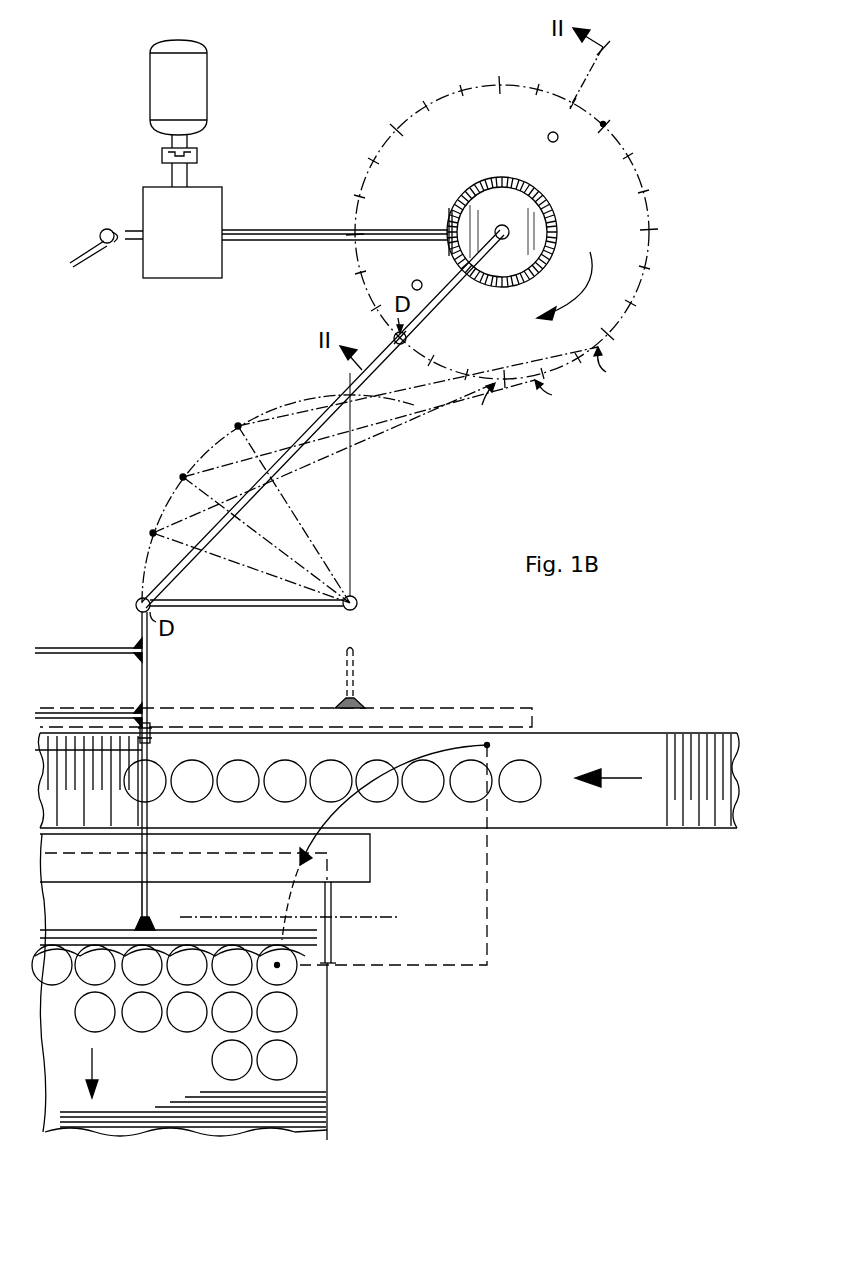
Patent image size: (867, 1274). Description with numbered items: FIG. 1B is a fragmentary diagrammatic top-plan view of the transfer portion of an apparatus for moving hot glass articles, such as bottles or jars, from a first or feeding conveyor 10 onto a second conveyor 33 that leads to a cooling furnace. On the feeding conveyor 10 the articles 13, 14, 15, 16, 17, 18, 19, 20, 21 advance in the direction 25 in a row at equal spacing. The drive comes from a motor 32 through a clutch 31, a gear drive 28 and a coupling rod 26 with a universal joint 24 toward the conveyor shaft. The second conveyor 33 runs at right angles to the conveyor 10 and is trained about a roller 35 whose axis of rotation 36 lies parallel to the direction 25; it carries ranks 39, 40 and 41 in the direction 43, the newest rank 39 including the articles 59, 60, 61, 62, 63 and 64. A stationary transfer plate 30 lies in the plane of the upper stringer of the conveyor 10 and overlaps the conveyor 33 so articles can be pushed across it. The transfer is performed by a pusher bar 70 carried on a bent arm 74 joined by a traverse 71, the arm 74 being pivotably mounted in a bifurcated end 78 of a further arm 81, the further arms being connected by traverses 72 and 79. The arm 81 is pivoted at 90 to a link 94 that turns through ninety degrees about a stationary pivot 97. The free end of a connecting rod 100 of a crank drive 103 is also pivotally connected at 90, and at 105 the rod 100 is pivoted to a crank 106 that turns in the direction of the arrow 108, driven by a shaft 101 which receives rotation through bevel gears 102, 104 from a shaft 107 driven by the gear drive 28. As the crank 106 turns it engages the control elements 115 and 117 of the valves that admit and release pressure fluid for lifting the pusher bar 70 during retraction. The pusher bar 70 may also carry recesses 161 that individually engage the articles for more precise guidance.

The first or feeding conveyor 10 is at (606, 733).
The article 13 is at (157, 798).
The article 14 is at (200, 762).
The article 15 is at (245, 800).
The article 16 is at (290, 762).
The article 17 is at (335, 800).
The article 18 is at (378, 762).
The article 19 is at (428, 800).
The article 20 is at (486, 800).
The article 21 is at (540, 766).
The universal joint 24 is at (105, 248).
The direction of travel 25 is at (622, 780).
The coupling rod 26 is at (80, 248).
The gear drive 28 is at (192, 280).
The stationary transfer plate 30 is at (370, 862).
The clutch 31 is at (205, 157).
The motor 32 is at (212, 88).
The second conveyor 33 is at (336, 1105).
The roller 35 is at (331, 898).
The axis of rotation 36 is at (370, 917).
The rank 39 is at (312, 972).
The rank 40 is at (312, 1012).
The rank 41 is at (312, 1057).
The direction of advancement 43 is at (97, 1073).
The article 59 is at (63, 977).
The article 60 is at (106, 977).
The article 61 is at (153, 977).
The article 62 is at (198, 977).
The article 63 is at (243, 977).
The article 64 is at (262, 944).
The pusher bar 70 is at (430, 706).
The traverse 71 is at (87, 740).
The traverse 72 is at (118, 713).
The arm 74 is at (142, 871).
The bifurcated end 78 is at (150, 715).
The traverse 79 is at (72, 648).
The arm 81 is at (150, 670).
The pivot 90 is at (138, 601).
The link 94 is at (278, 608).
The stationary pivot 97 is at (357, 610).
The connecting rod 100 is at (318, 430).
The shaft 101 is at (507, 228).
The bevel gear 102 is at (548, 212).
The crank drive 103 is at (458, 424).
The bevel gear 104 is at (445, 220).
The pivot 105 is at (408, 340).
The crank 106 is at (453, 273).
The shaft 107 is at (285, 228).
The arrow 108 is at (580, 292).
The control element 115 is at (412, 285).
The control element 117 is at (549, 134).
The recess 161 is at (332, 950).